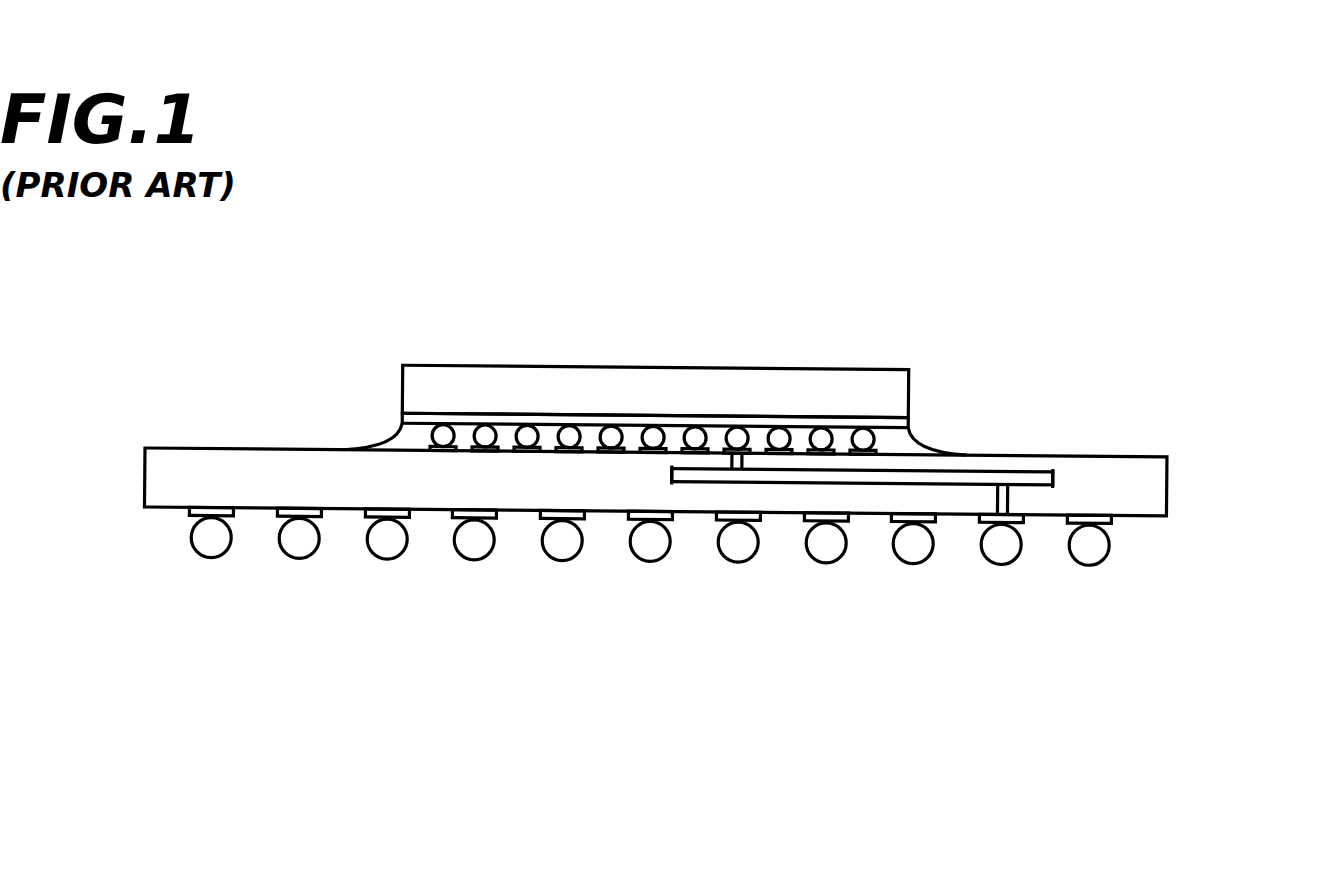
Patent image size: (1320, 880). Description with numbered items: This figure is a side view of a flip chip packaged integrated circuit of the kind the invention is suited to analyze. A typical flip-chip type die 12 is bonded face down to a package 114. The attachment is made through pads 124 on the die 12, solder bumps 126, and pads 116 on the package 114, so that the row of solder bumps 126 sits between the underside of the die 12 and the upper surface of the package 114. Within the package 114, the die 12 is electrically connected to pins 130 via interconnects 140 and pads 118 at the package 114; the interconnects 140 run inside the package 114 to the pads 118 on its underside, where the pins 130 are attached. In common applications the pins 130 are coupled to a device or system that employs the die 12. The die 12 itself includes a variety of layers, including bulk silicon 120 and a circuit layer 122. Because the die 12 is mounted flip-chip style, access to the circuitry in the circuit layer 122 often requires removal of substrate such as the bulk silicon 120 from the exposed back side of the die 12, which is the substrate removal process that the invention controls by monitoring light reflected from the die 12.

The flip-chip type die 12 is at (624, 405).
The package 114 is at (1168, 483).
The pads 116 is at (473, 439).
The pads 118 is at (233, 514).
The bulk silicon 120 is at (920, 371).
The circuit layer 122 is at (917, 410).
The pads 124 is at (442, 424).
The solder bumps 126 is at (821, 429).
The pins 130 is at (652, 556).
The interconnects 140 is at (958, 480).